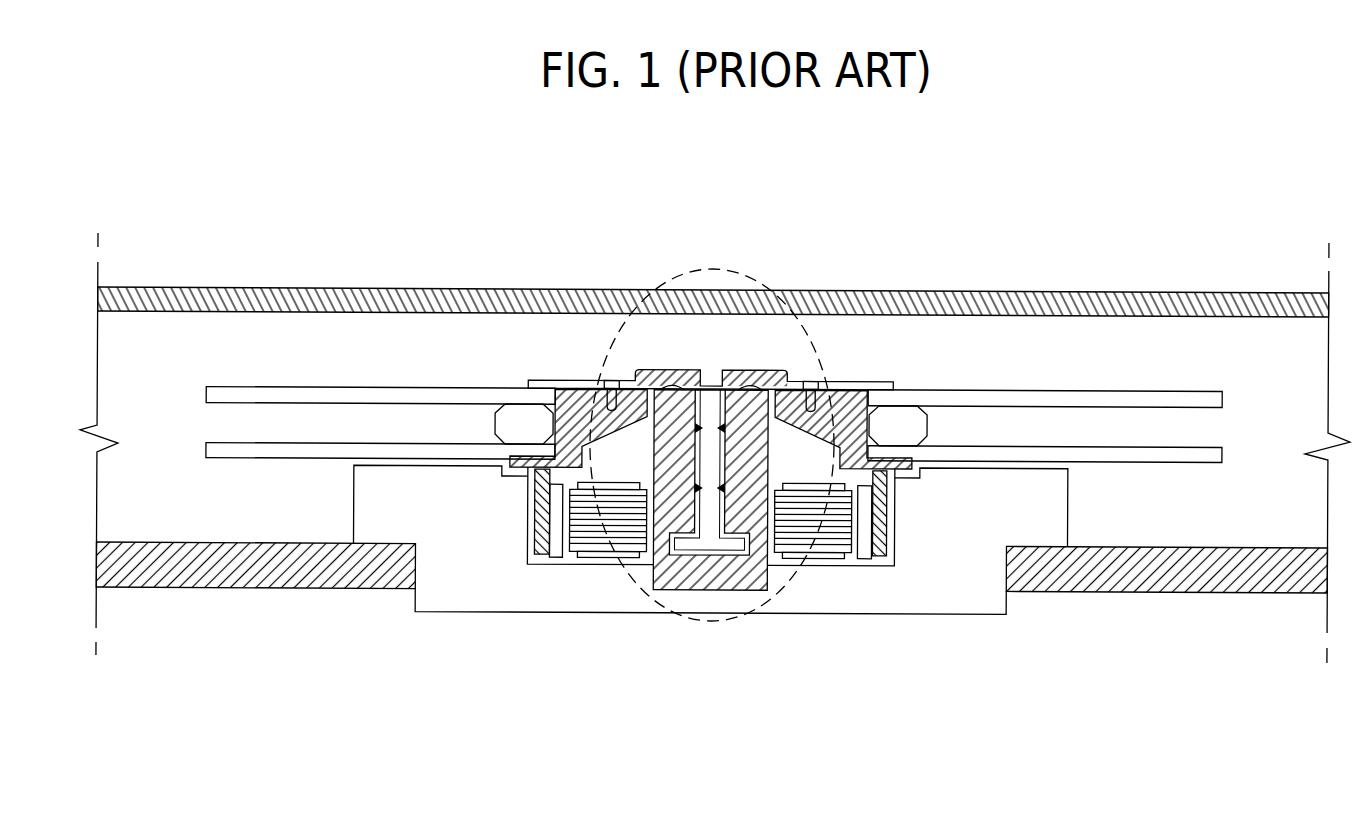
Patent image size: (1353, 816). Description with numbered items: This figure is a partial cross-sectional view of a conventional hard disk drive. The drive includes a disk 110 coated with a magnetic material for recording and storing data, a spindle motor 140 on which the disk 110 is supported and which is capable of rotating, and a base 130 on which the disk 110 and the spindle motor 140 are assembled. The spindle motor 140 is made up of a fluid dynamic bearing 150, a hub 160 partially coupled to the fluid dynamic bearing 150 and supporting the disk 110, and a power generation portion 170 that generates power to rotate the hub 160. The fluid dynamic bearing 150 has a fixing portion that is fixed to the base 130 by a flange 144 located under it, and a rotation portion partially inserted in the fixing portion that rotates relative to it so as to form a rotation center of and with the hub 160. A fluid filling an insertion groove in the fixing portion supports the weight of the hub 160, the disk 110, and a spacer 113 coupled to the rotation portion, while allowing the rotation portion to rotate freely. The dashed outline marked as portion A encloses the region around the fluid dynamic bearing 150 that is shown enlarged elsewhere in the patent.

The disk 110 is at (287, 448).
The spacer 113 is at (518, 413).
The base 130 is at (222, 570).
The spindle motor 140 is at (737, 590).
The flange 144 is at (462, 583).
The fluid dynamic bearing 150 is at (711, 563).
The hub 160 is at (887, 490).
The power generation portion 170 is at (847, 578).
The portion A is at (641, 598).